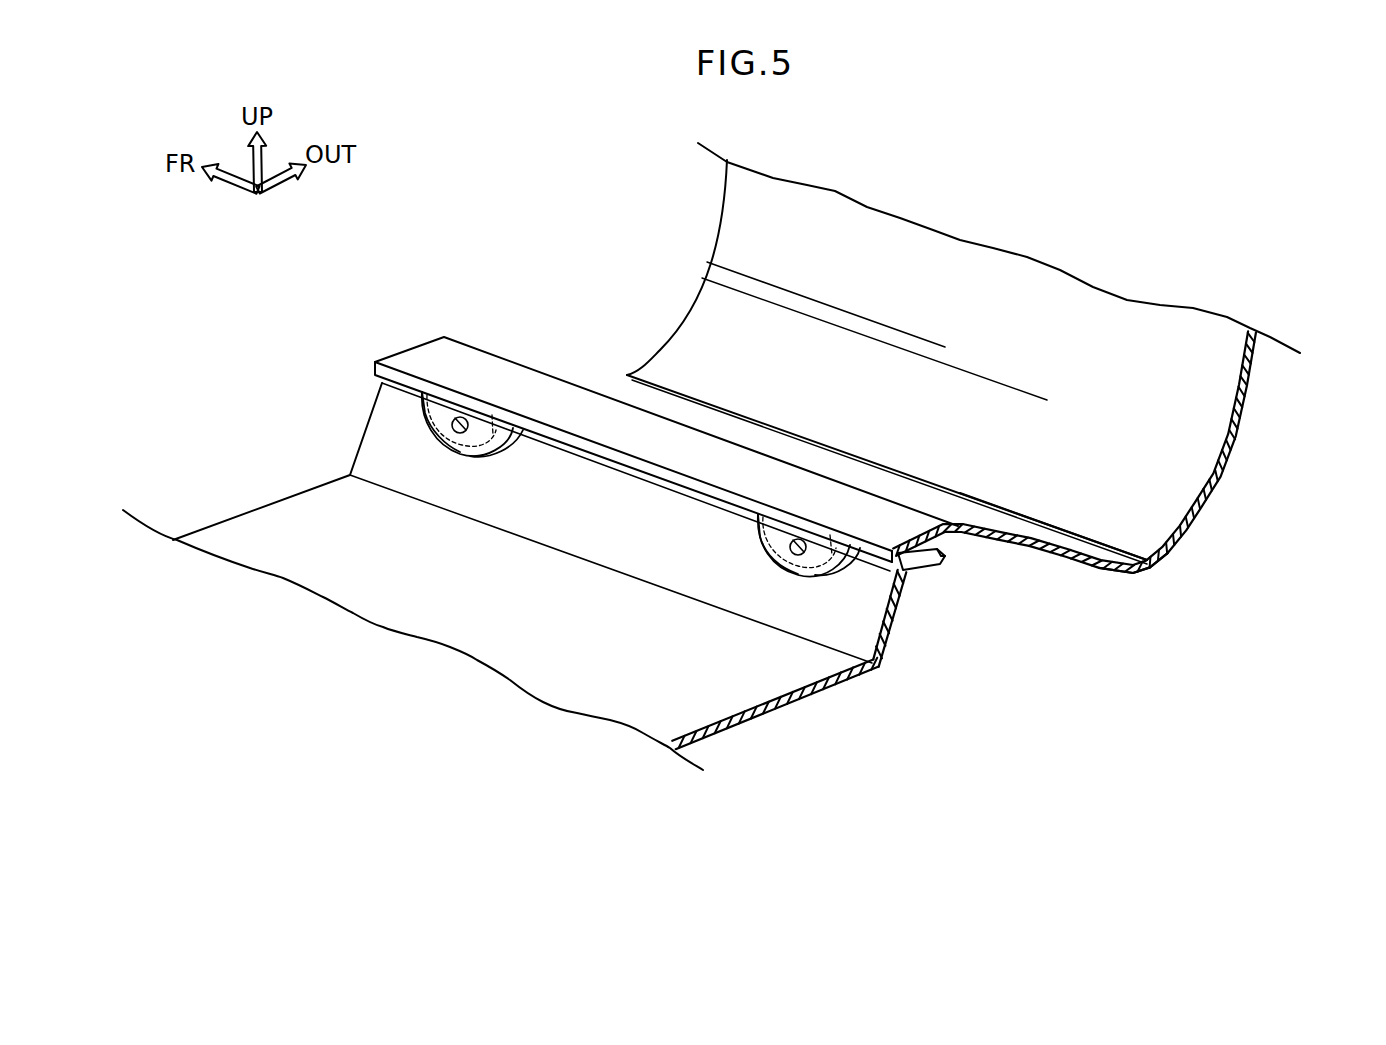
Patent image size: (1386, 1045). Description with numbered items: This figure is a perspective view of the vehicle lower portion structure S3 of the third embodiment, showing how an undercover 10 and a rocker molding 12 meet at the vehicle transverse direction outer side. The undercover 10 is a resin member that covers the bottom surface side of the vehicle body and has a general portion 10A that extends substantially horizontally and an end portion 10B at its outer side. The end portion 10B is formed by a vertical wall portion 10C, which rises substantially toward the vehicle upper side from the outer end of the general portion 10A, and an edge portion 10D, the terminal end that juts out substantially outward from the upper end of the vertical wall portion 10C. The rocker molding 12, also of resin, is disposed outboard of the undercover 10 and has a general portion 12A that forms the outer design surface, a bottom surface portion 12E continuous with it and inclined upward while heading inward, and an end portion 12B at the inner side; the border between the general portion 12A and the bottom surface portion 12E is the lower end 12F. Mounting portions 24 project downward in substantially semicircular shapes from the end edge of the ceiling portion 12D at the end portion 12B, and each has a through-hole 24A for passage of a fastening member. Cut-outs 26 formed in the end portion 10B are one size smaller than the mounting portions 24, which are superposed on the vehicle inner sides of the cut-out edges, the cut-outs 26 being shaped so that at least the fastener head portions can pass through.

The undercover 10 is at (574, 615).
The general portion 10A is at (760, 725).
The end portion 10B is at (949, 655).
The vertical wall portion 10C is at (892, 635).
The edge portion 10D is at (932, 567).
The rocker molding 12 is at (991, 388).
The general portion 12A is at (1248, 385).
The end portion 12B is at (737, 460).
The ceiling portion 12D is at (887, 469).
The bottom surface portion 12E is at (1005, 517).
The lower end 12F is at (1167, 570).
The mounting portion 24 is at (442, 447).
The through-hole 24A is at (453, 428).
The cut-out 26 is at (469, 457).
The vehicle lower portion structure S3 is at (513, 198).